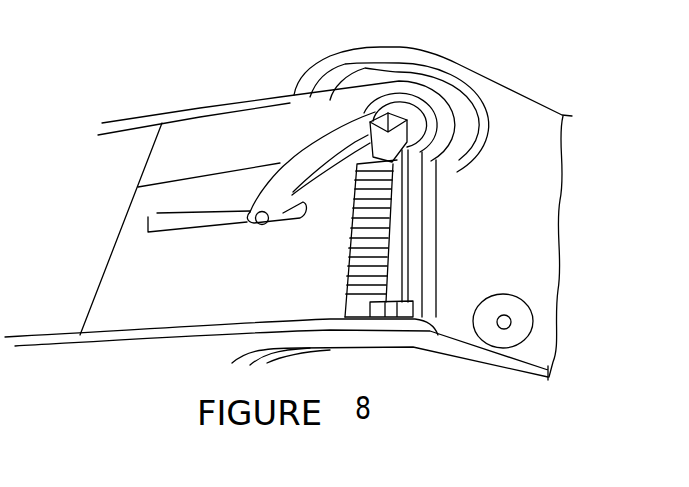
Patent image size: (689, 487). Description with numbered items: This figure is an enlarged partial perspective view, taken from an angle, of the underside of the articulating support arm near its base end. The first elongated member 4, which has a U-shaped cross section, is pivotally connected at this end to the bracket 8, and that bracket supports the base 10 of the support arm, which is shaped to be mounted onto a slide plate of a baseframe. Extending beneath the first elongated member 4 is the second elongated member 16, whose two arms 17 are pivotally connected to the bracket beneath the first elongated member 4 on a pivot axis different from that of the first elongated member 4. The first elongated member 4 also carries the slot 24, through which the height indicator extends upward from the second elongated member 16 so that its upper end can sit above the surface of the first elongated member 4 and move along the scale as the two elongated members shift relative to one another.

The first elongated member 4 is at (160, 297).
The bracket 8 is at (452, 351).
The base 10 is at (528, 230).
The second elongated member 16 is at (53, 313).
The arms 17 is at (295, 128).
The slot 24 is at (187, 221).